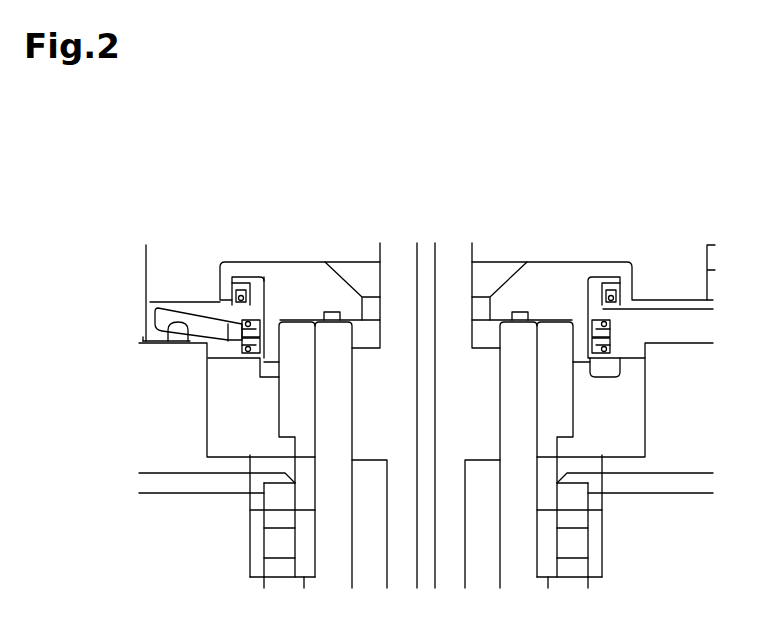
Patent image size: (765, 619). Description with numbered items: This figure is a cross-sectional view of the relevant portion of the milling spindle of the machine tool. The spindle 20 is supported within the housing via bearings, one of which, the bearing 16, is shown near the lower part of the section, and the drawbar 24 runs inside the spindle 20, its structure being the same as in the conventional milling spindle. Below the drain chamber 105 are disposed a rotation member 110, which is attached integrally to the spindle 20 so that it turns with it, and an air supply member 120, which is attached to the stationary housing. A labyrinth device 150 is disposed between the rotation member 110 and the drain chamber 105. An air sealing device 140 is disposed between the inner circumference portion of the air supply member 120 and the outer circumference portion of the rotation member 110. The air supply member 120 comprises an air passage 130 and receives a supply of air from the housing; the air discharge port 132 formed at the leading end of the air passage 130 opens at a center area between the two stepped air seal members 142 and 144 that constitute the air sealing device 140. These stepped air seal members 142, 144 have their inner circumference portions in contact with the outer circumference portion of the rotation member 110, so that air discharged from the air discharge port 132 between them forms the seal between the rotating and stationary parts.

The drain chamber 105 is at (466, 198).
The rotation member 110 is at (548, 285).
The labyrinth device 150 is at (243, 296).
The air discharge port 132 is at (263, 340).
The stepped air seal member 142 is at (250, 322).
The stepped air seal member 144 is at (255, 348).
The air sealing device 140 is at (236, 340).
The air supply member 120 is at (208, 346).
The air passage 130 is at (148, 336).
The drawbar 24 is at (300, 437).
The spindle 20 is at (337, 492).
The bearing 16 is at (228, 551).